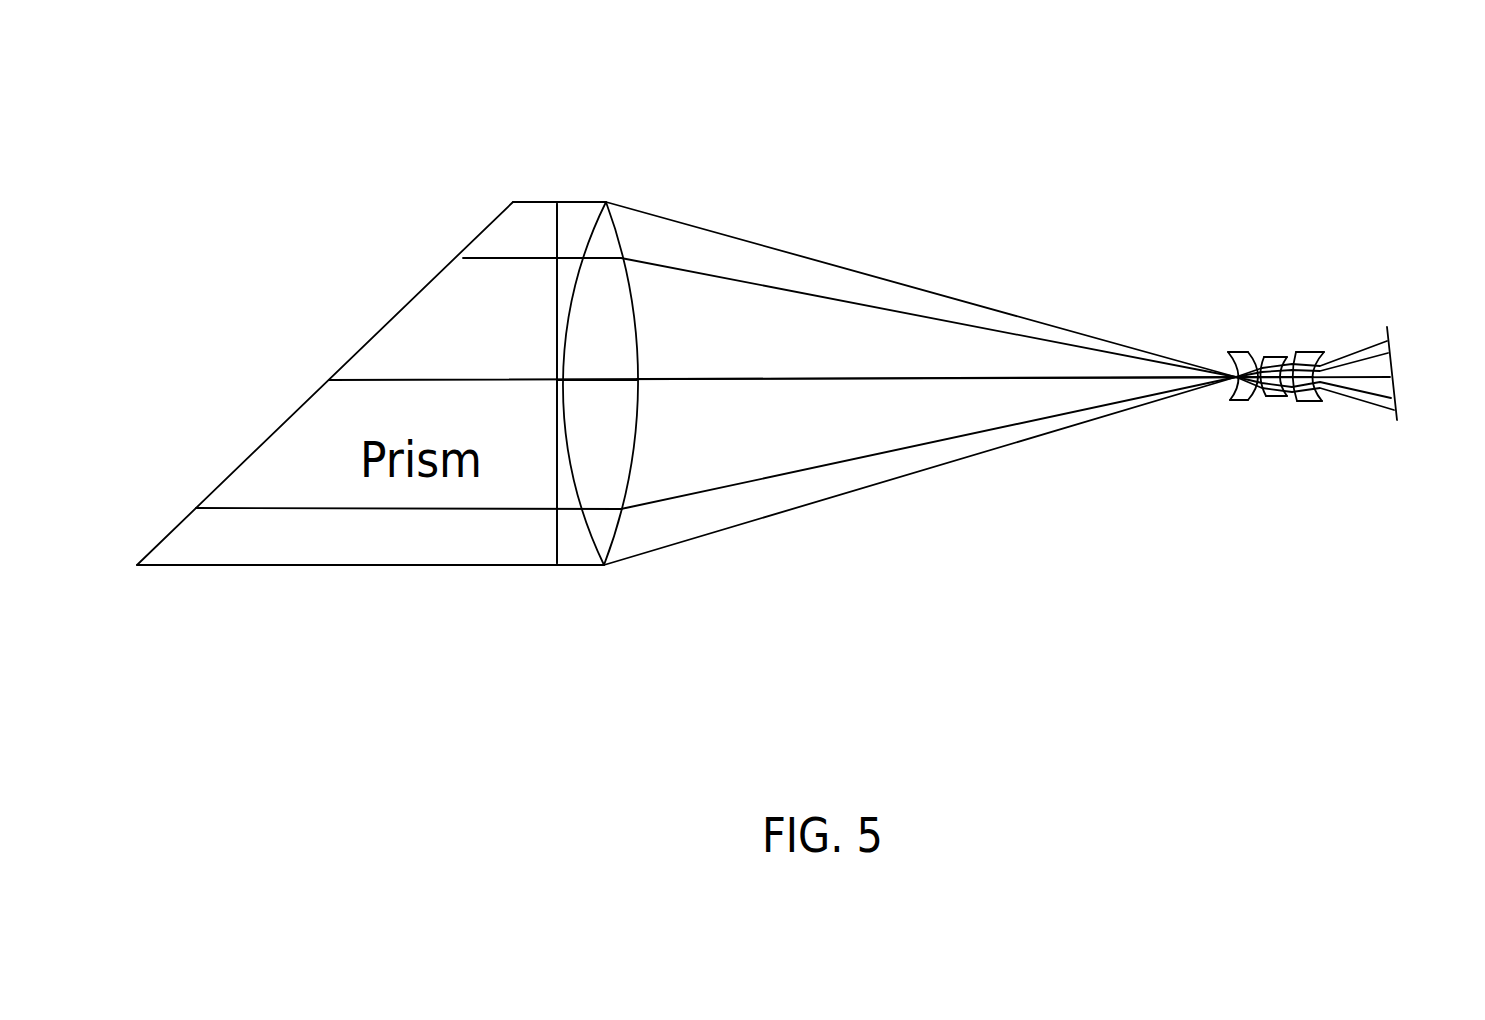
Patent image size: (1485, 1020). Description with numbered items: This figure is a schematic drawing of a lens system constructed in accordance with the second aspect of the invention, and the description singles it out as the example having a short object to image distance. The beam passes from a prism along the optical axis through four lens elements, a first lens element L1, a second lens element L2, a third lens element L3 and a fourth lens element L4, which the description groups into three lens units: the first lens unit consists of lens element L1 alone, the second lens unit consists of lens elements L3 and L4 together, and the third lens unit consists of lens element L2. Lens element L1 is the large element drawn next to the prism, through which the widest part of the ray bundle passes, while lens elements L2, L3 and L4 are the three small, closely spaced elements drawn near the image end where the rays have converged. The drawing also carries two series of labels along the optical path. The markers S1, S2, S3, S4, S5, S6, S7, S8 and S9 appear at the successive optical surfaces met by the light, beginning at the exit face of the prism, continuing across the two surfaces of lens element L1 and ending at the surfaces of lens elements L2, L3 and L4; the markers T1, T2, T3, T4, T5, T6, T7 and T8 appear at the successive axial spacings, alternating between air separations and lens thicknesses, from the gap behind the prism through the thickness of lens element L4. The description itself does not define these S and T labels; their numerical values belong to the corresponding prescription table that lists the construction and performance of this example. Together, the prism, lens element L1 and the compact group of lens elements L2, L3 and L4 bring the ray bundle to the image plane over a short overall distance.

The first lens element L1 is at (651, 389).
The second lens element L2 is at (1145, 388).
The third lens element L3 is at (1308, 430).
The fourth lens element L4 is at (1384, 379).
The prism exit surface S1 is at (559, 565).
The first lens front surface S2 is at (592, 540).
The first lens rear surface S3 is at (618, 528).
The second lens front surface S4 is at (1231, 391).
The second lens rear surface S5 is at (1252, 390).
The third lens front surface S6 is at (1264, 398).
The third lens rear surface S7 is at (1305, 400).
The fourth lens front surface S8 is at (1317, 401).
The fourth lens rear surface S9 is at (1330, 388).
The air gap between prism and first lens T1 is at (563, 376).
The first lens thickness T2 is at (597, 380).
The air gap between first and second lens T3 is at (888, 380).
The second lens thickness T4 is at (1235, 392).
The air gap between second and third lens T5 is at (1262, 382).
The third lens thickness T6 is at (1284, 400).
The air gap between third and fourth lens T7 is at (1320, 394).
The fourth lens thickness T8 is at (1310, 352).